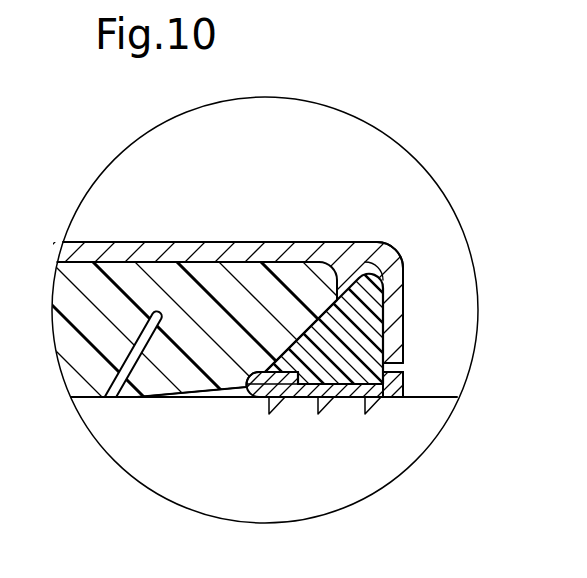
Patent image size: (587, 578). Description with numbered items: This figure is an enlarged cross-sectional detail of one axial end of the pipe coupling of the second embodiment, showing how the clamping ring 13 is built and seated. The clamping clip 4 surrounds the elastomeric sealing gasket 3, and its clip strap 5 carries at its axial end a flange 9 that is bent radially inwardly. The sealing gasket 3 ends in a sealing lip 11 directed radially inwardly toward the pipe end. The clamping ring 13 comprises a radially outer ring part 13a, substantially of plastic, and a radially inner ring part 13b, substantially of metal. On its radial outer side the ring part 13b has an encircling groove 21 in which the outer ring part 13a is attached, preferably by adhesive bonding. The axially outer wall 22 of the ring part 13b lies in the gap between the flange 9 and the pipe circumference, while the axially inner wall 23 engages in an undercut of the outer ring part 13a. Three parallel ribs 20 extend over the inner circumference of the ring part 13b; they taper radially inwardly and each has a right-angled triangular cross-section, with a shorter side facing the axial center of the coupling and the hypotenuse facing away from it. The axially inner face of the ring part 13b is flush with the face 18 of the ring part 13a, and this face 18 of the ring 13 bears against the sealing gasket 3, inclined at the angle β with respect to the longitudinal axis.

The sealing gasket 3 is at (196, 262).
The clamping clip 4 is at (321, 242).
The clip strap 5 is at (267, 241).
The flange 9 is at (404, 312).
The sealing lip 11 is at (93, 378).
The clamping ring 13 is at (386, 334).
The radially outer ring part 13a is at (388, 293).
The radially inner ring part 13b is at (347, 397).
The face 18 is at (349, 275).
The rib 20 is at (278, 402).
The encircling groove 21 is at (330, 364).
The axially outer wall 22 is at (404, 386).
The axially inner wall 23 is at (265, 395).